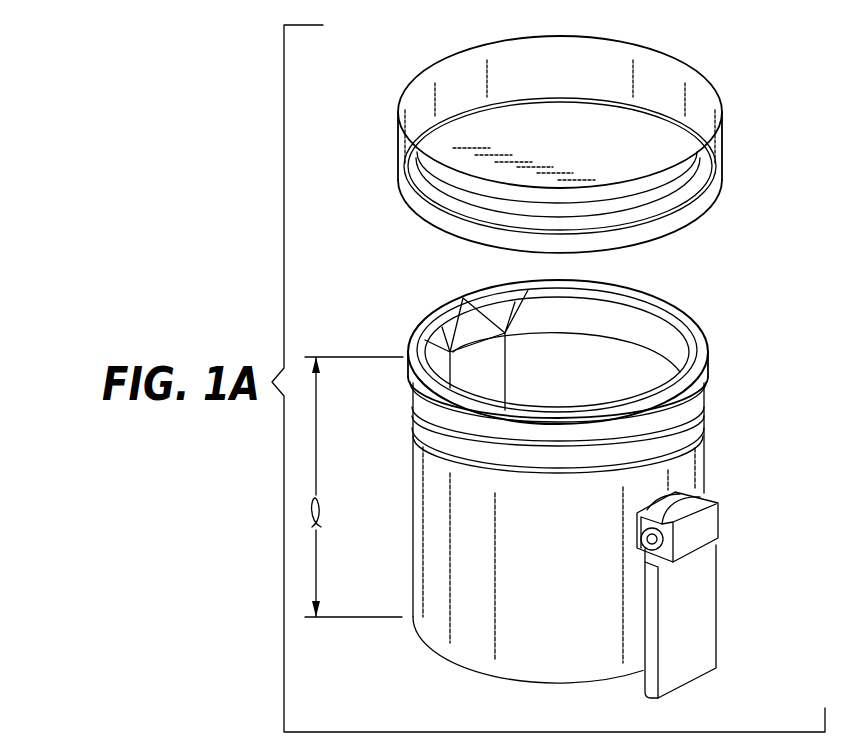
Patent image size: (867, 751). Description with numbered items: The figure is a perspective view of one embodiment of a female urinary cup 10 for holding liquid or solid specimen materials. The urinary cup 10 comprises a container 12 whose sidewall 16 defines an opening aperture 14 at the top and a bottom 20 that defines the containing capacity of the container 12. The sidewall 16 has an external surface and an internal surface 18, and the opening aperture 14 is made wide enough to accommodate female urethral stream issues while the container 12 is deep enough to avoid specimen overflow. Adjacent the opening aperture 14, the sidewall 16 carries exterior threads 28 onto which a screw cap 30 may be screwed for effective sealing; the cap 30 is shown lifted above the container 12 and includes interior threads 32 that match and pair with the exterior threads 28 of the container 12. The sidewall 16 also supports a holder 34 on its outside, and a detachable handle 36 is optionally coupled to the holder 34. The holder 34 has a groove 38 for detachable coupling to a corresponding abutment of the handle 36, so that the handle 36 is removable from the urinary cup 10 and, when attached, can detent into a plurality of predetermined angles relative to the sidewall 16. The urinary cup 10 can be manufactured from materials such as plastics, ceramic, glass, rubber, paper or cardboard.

The urinary cup 10 is at (772, 198).
The container 12 is at (412, 456).
The opening aperture 14 is at (466, 297).
The sidewall 16 is at (699, 438).
The internal surface 18 is at (643, 320).
The bottom 20 is at (463, 670).
The exterior threads 28 is at (407, 370).
The cap 30 is at (689, 70).
The interior threads 32 is at (640, 214).
The holder 34 is at (705, 530).
The detachable handle 36 is at (690, 633).
The groove 38 is at (664, 521).